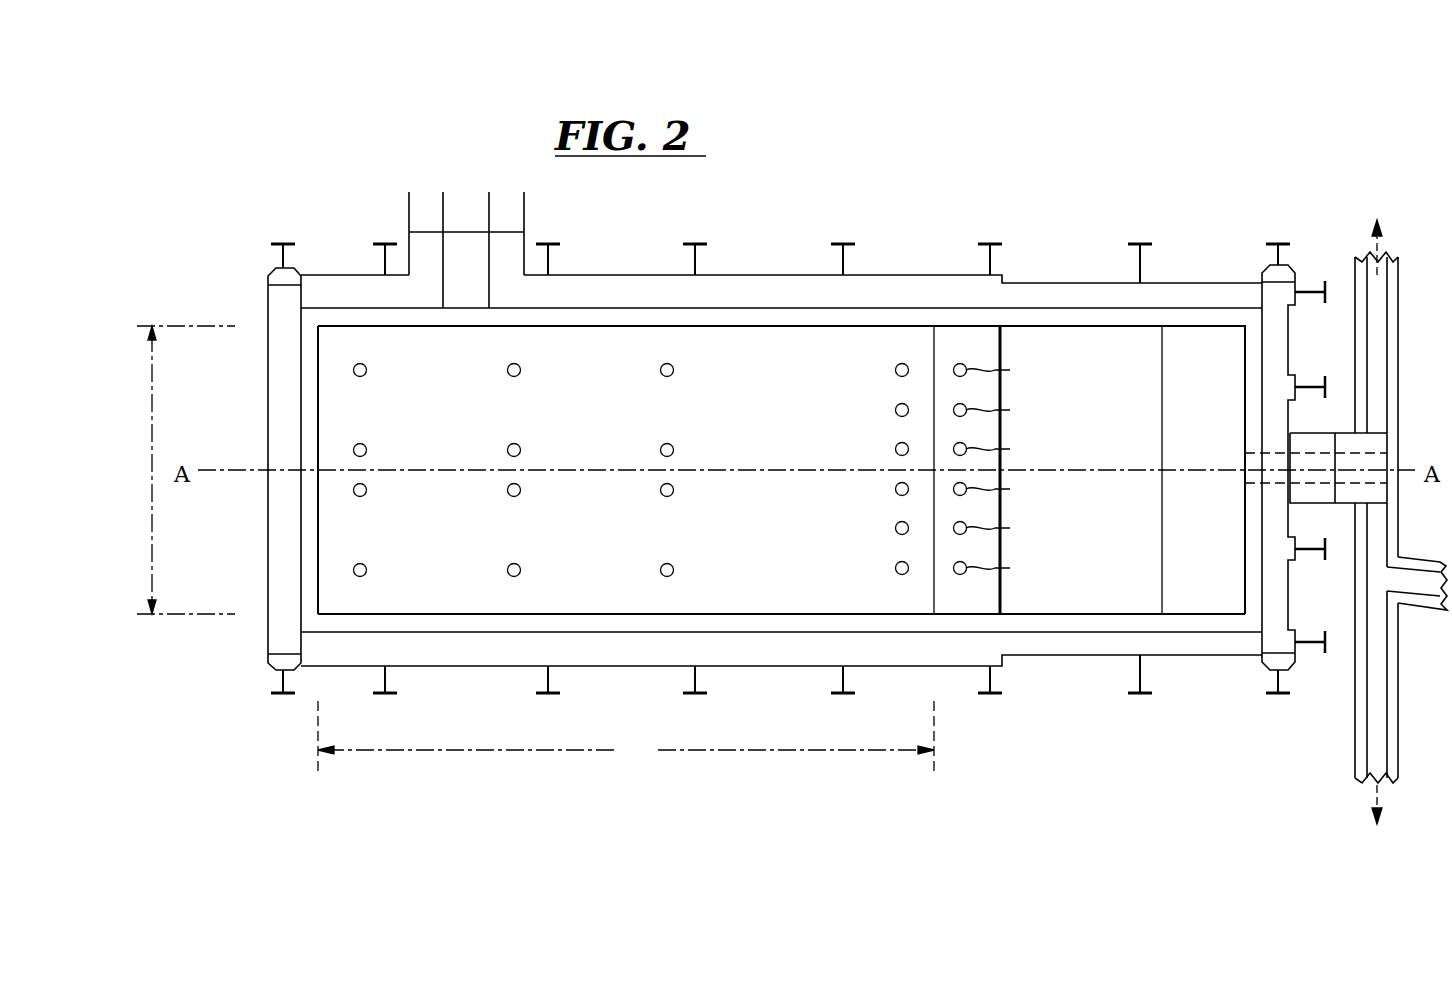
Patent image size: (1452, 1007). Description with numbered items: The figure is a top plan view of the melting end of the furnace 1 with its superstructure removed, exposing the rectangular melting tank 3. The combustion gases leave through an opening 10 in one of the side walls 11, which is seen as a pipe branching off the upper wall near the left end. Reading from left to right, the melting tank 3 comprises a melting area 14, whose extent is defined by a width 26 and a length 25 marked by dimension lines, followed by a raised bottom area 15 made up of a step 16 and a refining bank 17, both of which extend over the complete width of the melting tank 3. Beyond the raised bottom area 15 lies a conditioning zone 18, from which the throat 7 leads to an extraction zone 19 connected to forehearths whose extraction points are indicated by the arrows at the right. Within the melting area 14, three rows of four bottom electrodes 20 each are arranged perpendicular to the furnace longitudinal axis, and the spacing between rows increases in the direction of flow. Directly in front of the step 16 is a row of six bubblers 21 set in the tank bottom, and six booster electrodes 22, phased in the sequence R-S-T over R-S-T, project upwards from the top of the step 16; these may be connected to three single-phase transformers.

The furnace 1 is at (938, 174).
The melting tank 3 is at (781, 622).
The throat 7 is at (1310, 470).
The opening 10 is at (455, 294).
The side walls 11 is at (619, 298).
The melting area 14 is at (605, 531).
The raised bottom area 15 is at (1161, 701).
The step 16 is at (950, 545).
The refining bank 17 is at (1092, 542).
The conditioning zone 18 is at (1220, 547).
The extraction zone 19 is at (1388, 390).
The bottom electrodes 20 is at (367, 490).
The bubblers 21 is at (896, 489).
The booster electrodes 22 is at (960, 347).
The length 25 is at (626, 737).
The width 26 is at (186, 470).